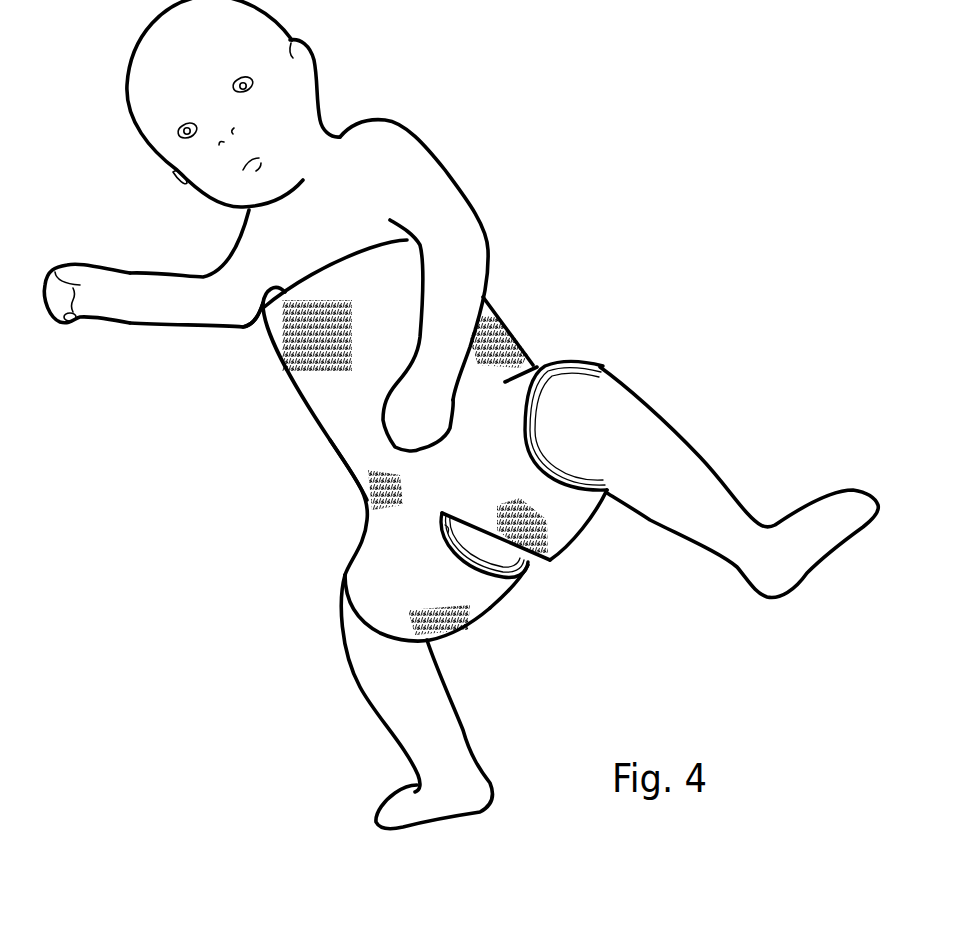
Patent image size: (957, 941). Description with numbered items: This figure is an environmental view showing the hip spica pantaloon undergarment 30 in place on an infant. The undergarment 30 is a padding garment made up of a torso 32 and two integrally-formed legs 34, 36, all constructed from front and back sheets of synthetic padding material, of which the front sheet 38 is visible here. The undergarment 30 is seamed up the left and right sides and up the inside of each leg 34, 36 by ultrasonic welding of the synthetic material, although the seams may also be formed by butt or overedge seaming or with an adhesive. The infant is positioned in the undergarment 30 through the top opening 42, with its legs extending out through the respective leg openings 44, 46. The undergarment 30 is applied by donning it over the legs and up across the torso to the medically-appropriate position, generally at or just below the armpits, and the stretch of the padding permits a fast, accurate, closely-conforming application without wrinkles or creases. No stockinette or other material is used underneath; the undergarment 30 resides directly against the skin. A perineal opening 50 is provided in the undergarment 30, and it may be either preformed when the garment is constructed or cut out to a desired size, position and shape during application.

The hip spica pantaloon undergarment 30 is at (578, 294).
The torso 32 is at (307, 370).
The leg 34 is at (377, 567).
The leg 36 is at (515, 412).
The front sheet of synthetic padding material 38 is at (342, 413).
The top opening 42 is at (263, 290).
The leg opening 44 is at (373, 608).
The leg opening 46 is at (583, 483).
The perineal opening 50 is at (442, 513).